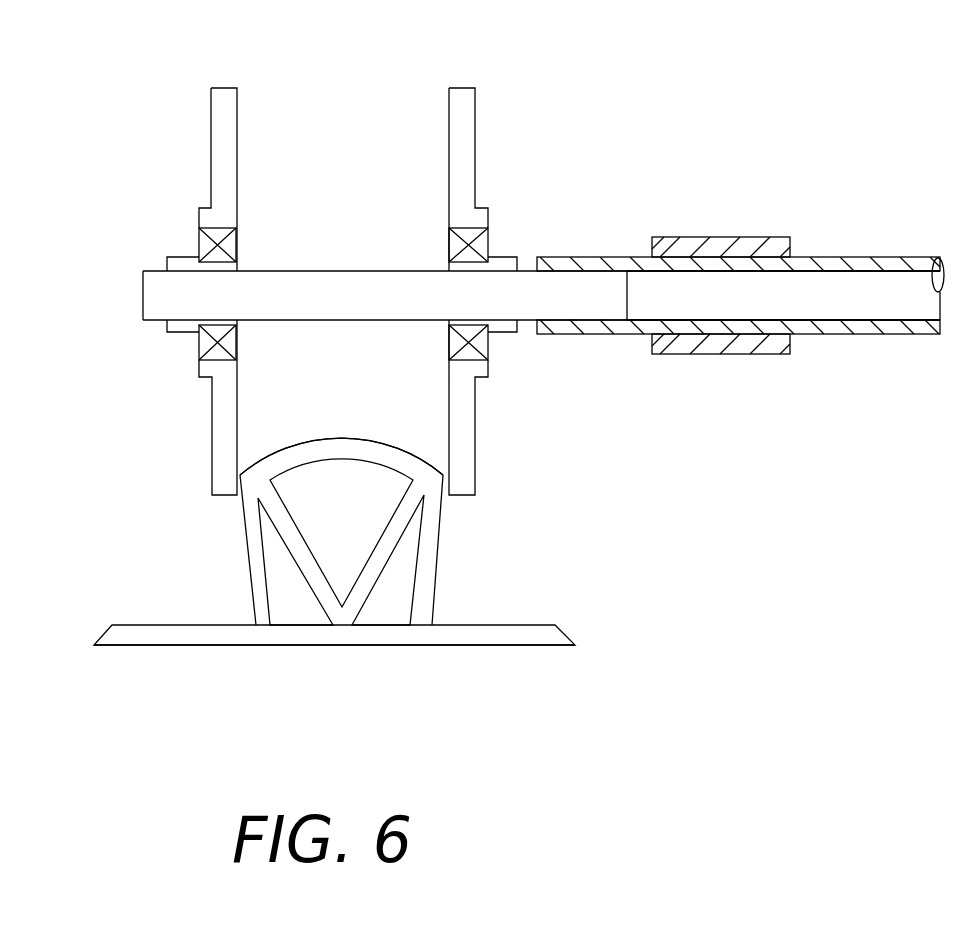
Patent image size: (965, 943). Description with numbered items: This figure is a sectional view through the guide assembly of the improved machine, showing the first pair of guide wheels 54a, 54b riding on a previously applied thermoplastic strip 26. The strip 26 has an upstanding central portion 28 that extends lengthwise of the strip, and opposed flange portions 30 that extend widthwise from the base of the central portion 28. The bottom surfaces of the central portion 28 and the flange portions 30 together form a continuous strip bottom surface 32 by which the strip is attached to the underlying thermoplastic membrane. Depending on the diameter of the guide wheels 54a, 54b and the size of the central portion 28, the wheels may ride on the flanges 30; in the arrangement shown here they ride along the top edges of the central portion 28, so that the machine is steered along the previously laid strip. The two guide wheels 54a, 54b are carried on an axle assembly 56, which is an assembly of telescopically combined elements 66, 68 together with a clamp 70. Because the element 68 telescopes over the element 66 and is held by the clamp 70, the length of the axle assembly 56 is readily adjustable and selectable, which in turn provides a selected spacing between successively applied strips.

The thermoplastic strip 26 is at (242, 516).
The central portion 28 is at (342, 438).
The flange portions 30 is at (502, 625).
The strip bottom surface 32 is at (542, 647).
The guide wheel 54a is at (225, 88).
The guide wheel 54b is at (463, 88).
The axle assembly 56 is at (858, 258).
The telescopically combined element 66 is at (359, 271).
The telescopically combined element 68 is at (580, 257).
The clamp 70 is at (702, 237).